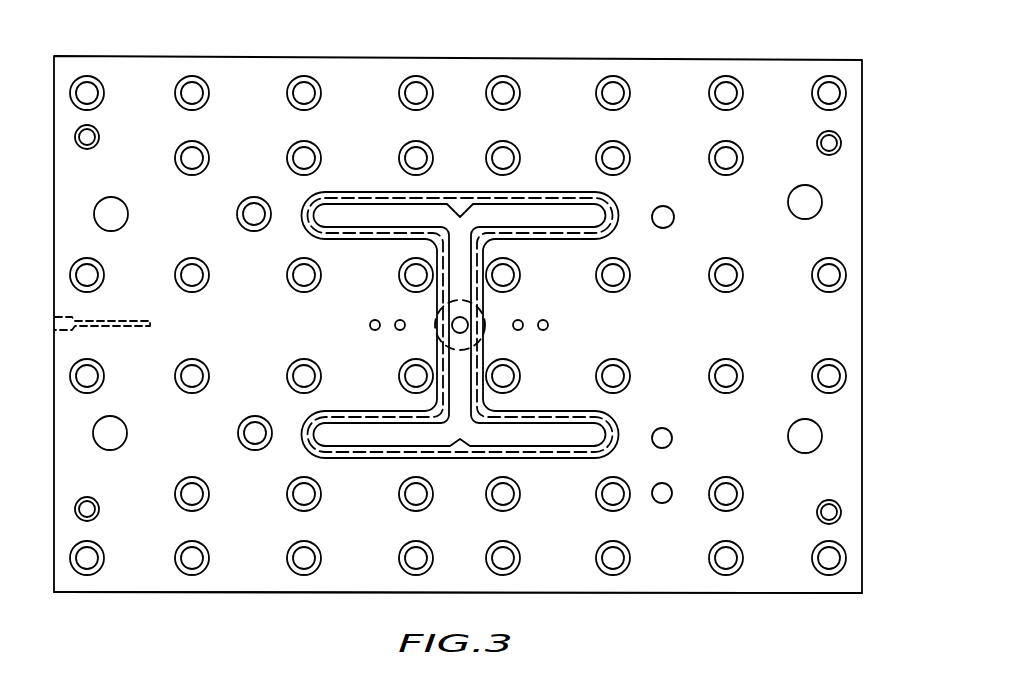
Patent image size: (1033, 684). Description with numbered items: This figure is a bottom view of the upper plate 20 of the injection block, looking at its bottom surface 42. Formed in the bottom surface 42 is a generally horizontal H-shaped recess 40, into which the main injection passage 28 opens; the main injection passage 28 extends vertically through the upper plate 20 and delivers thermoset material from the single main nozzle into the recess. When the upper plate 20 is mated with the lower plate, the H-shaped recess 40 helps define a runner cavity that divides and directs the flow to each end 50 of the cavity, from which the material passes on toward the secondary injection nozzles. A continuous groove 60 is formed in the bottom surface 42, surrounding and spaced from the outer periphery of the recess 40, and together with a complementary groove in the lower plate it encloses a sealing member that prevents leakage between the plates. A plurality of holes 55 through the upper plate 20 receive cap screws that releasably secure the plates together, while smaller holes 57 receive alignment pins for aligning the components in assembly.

The upper plate 20 is at (650, 59).
The main injection passage 28 is at (462, 325).
The H-shaped recess 40 is at (518, 428).
The bottom surface 42 is at (777, 578).
The end of the cavity 50 is at (306, 200).
The holes 55 is at (812, 433).
The smaller holes 57 is at (667, 489).
The continuous groove 60 is at (609, 239).